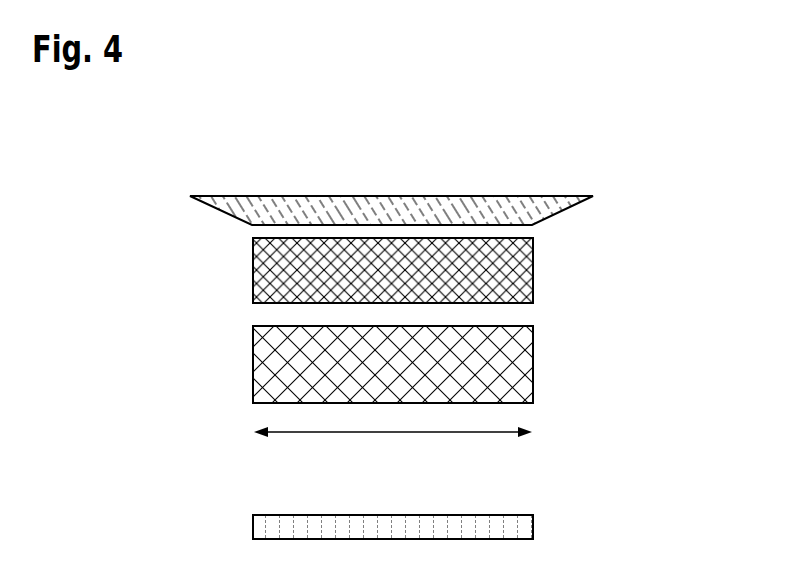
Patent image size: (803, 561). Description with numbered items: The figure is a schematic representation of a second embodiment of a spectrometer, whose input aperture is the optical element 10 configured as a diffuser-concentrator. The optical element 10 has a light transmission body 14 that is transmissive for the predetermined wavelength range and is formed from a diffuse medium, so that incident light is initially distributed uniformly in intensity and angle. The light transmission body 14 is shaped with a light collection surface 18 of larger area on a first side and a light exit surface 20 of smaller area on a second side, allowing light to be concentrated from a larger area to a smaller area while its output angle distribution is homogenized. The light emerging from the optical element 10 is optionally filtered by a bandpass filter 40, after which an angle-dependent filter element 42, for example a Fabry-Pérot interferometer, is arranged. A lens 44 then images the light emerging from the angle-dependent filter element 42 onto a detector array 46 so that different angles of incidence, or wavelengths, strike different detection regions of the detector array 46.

The optical element 10 is at (640, 211).
The light transmission body 14 is at (487, 210).
The light collection surface 18 is at (422, 182).
The light exit surface 20 is at (488, 225).
The bandpass filter 40 is at (522, 290).
The angle-dependent filter element 42 is at (521, 358).
The lens 44 is at (490, 433).
The detector array 46 is at (522, 530).